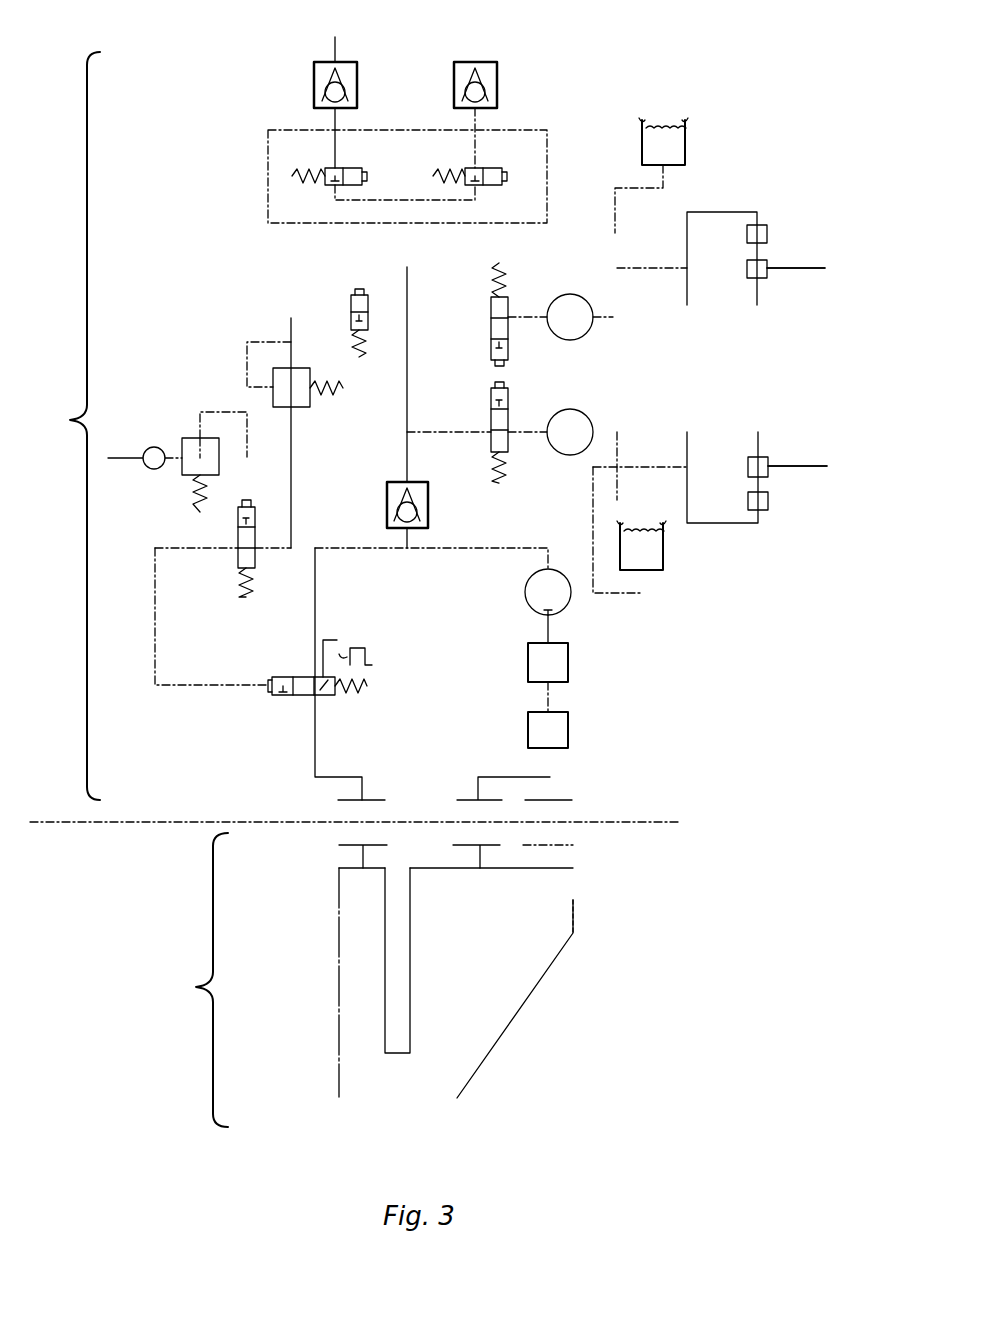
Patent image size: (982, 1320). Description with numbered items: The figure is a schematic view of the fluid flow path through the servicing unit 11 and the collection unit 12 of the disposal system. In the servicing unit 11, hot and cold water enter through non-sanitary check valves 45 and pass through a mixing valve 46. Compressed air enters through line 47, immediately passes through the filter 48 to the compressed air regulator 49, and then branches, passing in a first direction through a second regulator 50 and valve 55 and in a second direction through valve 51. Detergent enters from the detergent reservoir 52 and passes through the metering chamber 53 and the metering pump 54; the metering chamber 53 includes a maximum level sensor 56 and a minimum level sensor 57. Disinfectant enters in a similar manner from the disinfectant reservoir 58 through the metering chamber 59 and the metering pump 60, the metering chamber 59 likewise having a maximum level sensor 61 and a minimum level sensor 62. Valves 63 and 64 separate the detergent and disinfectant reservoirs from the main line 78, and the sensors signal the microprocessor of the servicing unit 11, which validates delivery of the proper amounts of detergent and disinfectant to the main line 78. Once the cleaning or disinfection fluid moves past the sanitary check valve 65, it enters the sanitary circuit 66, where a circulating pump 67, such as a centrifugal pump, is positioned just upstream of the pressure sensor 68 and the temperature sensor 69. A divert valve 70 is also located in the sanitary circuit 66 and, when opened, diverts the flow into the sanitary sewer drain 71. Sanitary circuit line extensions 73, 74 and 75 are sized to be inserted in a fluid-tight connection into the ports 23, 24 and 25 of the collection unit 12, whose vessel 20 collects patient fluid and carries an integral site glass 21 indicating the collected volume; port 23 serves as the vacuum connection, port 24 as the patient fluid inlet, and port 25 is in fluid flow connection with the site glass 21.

The servicing unit 11 is at (55, 426).
The collection unit 12 is at (181, 980).
The vessel 20 is at (485, 953).
The site glass 21 is at (360, 1005).
The port 23 is at (548, 855).
The port 24 is at (470, 858).
The port 25 is at (345, 852).
The non-sanitary check valves 45 is at (314, 76).
The mixing valve 46 is at (547, 140).
The line 47 is at (125, 456).
The filter 48 is at (154, 470).
The compressed air regulator 49 is at (200, 438).
The second regulator 50 is at (273, 392).
The valve 51 is at (235, 560).
The detergent reservoir 52 is at (663, 568).
The metering chamber 53 is at (725, 432).
The metering pump 54 is at (592, 418).
The valve 55 is at (351, 305).
The maximum level sensor 56 is at (805, 465).
The minimum level sensor 57 is at (805, 500).
The disinfectant reservoir 58 is at (685, 140).
The metering chamber 59 is at (722, 212).
The metering pump 60 is at (590, 330).
The maximum level sensor 61 is at (800, 235).
The minimum level sensor 62 is at (805, 270).
The valve 63 is at (491, 402).
The valve 64 is at (491, 300).
The sanitary check valve 65 is at (428, 505).
The sanitary circuit 66 is at (427, 550).
The circulating pump 67 is at (523, 598).
The pressure sensor 68 is at (570, 662).
The temperature sensor 69 is at (570, 730).
The divert valve 70 is at (295, 697).
The sanitary sewer drain 71 is at (375, 665).
The sanitary circuit line extension 73 is at (562, 800).
The sanitary circuit line extension 74 is at (460, 797).
The sanitary circuit line extension 75 is at (370, 795).
The main line 78 is at (405, 398).